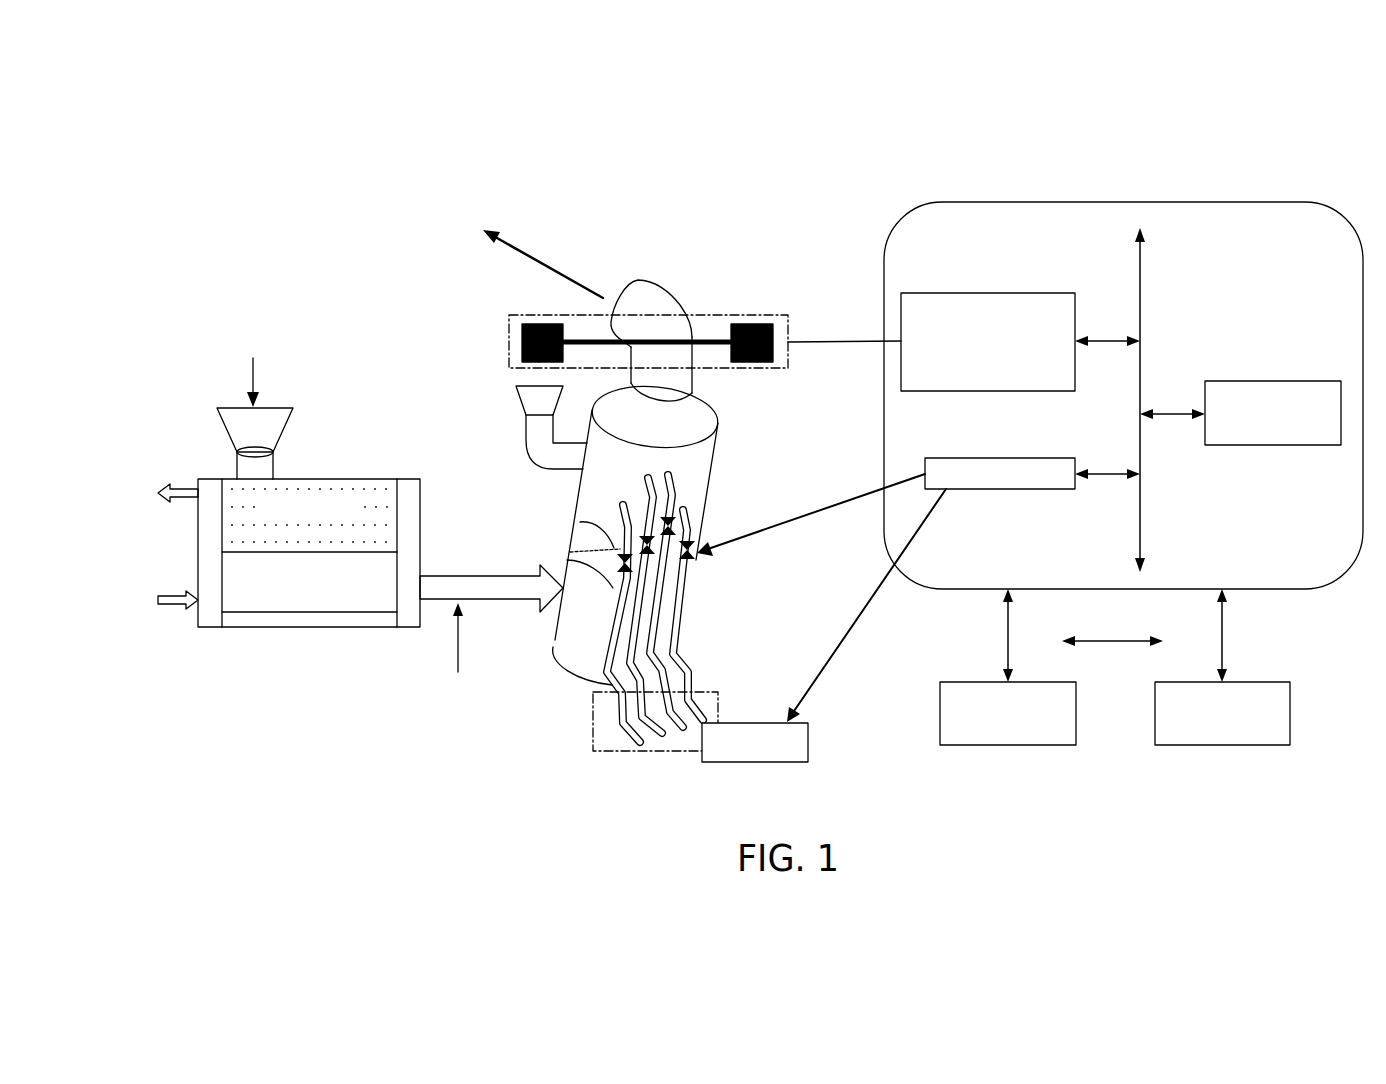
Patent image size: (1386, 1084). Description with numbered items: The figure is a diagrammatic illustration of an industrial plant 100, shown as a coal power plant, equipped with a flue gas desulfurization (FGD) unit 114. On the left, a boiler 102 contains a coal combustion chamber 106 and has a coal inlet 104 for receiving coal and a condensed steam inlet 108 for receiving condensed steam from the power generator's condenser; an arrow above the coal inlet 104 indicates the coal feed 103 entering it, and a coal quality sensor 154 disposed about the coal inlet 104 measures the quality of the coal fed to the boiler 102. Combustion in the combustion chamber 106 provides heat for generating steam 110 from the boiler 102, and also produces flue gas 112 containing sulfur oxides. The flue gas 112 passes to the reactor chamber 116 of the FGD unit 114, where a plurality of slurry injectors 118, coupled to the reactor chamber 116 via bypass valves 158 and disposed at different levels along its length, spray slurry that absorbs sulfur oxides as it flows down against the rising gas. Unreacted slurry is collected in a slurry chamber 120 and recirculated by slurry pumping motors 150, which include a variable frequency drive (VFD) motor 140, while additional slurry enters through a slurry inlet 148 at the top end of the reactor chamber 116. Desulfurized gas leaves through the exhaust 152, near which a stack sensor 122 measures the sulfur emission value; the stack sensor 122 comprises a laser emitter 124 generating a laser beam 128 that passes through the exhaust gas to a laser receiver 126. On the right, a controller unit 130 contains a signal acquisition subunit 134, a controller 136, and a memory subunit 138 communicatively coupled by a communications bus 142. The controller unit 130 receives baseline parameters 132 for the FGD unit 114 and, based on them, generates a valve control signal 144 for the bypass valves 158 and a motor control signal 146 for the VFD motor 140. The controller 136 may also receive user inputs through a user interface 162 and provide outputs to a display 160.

The industrial plant 100 is at (1290, 829).
The boiler 102 is at (333, 478).
The fuel feed 103 is at (250, 380).
The coal inlet 104 is at (222, 430).
The coal combustion chamber 106 is at (245, 608).
The condensed steam inlet 108 is at (173, 607).
The steam 110 is at (187, 500).
The flue gas 112 is at (452, 660).
The flue gas desulfurization (FGD) unit 114 is at (680, 195).
The reactor chamber 116 is at (580, 538).
The slurry injectors 118 is at (650, 630).
The slurry chamber 120 is at (563, 647).
The stack sensor 122 is at (722, 314).
The laser emitter 124 is at (757, 362).
The laser receiver 126 is at (500, 339).
The laser beam 128 is at (710, 338).
The controller unit 130 is at (1152, 202).
The baseline parameters 132 is at (820, 340).
The signal acquisition subunit 134 is at (1026, 391).
The controller 136 is at (1047, 489).
The memory subunit 138 is at (1279, 445).
The variable frequency drive (VFD) motor 140 is at (808, 742).
The communications bus 142 is at (1140, 278).
The valve control signal 144 is at (838, 502).
The motor control signal 146 is at (823, 660).
The slurry inlet 148 is at (512, 433).
The slurry pumping motors 150 is at (583, 742).
The exhaust 152 is at (503, 235).
The coal quality sensor 154 is at (263, 450).
The bypass valves 158 is at (672, 516).
The display 160 is at (1222, 745).
The user interface 162 is at (1008, 745).